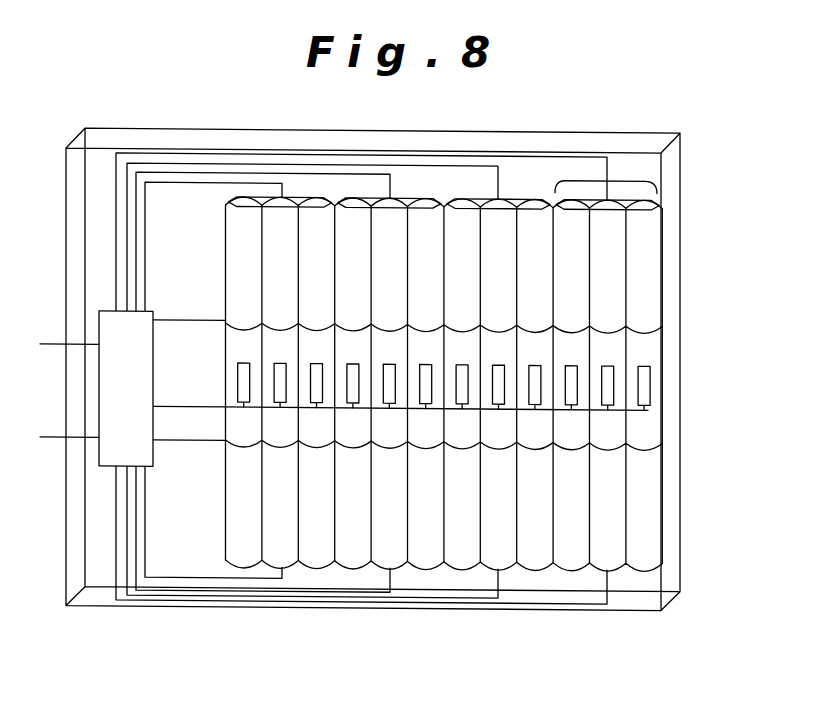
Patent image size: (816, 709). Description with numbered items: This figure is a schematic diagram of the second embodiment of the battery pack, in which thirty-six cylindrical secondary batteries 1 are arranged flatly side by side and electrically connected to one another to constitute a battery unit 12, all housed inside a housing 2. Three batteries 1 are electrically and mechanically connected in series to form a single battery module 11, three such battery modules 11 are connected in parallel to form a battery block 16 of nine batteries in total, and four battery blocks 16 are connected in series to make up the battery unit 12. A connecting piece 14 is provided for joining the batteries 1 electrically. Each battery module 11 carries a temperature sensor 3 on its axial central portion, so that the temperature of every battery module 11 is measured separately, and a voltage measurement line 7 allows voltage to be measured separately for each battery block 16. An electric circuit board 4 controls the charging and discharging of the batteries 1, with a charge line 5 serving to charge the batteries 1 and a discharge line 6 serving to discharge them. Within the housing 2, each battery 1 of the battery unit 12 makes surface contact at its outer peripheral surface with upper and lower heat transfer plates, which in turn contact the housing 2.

The cylindrical secondary battery 1 is at (652, 278).
The housing 2 is at (632, 138).
The temperature sensor 3 is at (650, 394).
The electric circuit board 4 is at (110, 378).
The charge line 5 is at (53, 343).
The discharge line 6 is at (53, 438).
The voltage measurement line 7 is at (360, 151).
The battery module 11 is at (640, 511).
The battery unit 12 is at (390, 378).
The connecting piece 14 is at (523, 193).
The battery block 16 is at (607, 195).